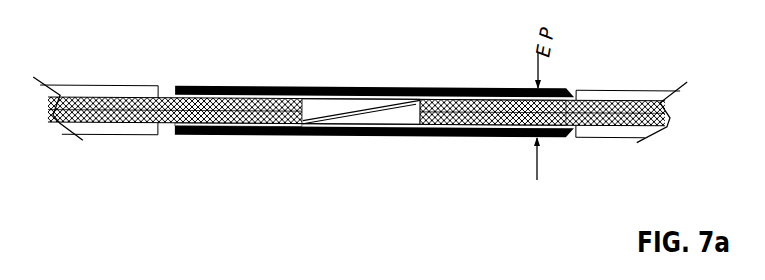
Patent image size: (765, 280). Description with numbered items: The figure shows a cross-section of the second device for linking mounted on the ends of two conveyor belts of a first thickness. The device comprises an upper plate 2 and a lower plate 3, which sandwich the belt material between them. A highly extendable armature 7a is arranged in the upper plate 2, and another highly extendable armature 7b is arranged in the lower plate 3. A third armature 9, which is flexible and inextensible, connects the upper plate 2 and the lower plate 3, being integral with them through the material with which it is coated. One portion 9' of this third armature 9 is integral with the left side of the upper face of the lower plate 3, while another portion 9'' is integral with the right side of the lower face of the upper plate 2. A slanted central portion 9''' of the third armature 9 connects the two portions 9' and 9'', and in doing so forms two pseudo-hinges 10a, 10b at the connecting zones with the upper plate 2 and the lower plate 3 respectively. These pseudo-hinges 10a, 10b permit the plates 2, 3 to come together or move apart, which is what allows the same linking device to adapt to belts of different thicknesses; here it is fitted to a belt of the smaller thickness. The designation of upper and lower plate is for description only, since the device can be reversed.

The upper plate 2 is at (170, 92).
The lower plate 3 is at (170, 127).
The armature 7a is at (247, 92).
The armature 7b is at (227, 131).
The third flexible and inextensible armature 9 is at (360, 102).
The portion of the third armature 9' is at (493, 67).
The portion of the third armature 9'' is at (238, 164).
The slanted central portion 9''' is at (361, 153).
The pseudo-hinge 10a is at (419, 99).
The pseudo-hinge 10b is at (305, 125).